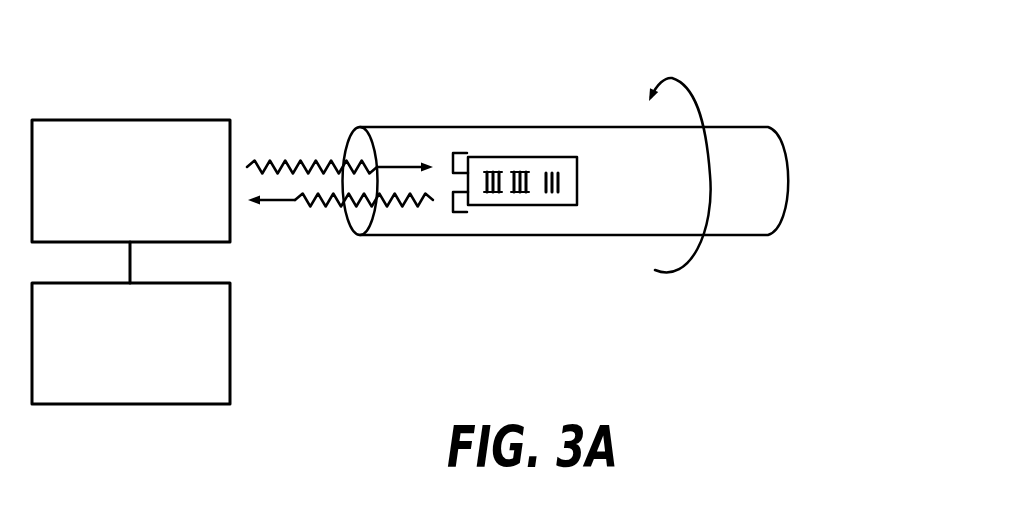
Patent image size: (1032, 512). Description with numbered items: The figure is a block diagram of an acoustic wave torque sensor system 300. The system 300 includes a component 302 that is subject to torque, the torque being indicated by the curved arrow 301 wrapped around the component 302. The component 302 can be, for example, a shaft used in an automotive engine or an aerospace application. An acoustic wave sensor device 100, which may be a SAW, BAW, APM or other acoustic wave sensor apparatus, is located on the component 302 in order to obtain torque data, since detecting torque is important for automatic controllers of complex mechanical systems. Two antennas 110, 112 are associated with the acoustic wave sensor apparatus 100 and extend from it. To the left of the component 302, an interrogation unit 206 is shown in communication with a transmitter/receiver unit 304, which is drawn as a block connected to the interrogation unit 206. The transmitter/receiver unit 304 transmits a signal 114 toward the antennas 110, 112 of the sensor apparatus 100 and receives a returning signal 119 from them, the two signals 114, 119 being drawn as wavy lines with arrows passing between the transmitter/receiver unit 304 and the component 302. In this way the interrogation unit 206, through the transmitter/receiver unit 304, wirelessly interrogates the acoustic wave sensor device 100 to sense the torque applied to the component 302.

The acoustic wave sensor device 100 is at (524, 125).
The antenna 110 is at (487, 130).
The antenna 112 is at (487, 236).
The signal 114 is at (340, 128).
The signal 119 is at (340, 244).
The interrogation unit 206 is at (179, 323).
The acoustic wave torque sensor system 300 is at (862, 33).
The arrow 301 is at (700, 149).
The component 302 is at (609, 181).
The transmitter/receiver unit 304 is at (131, 141).